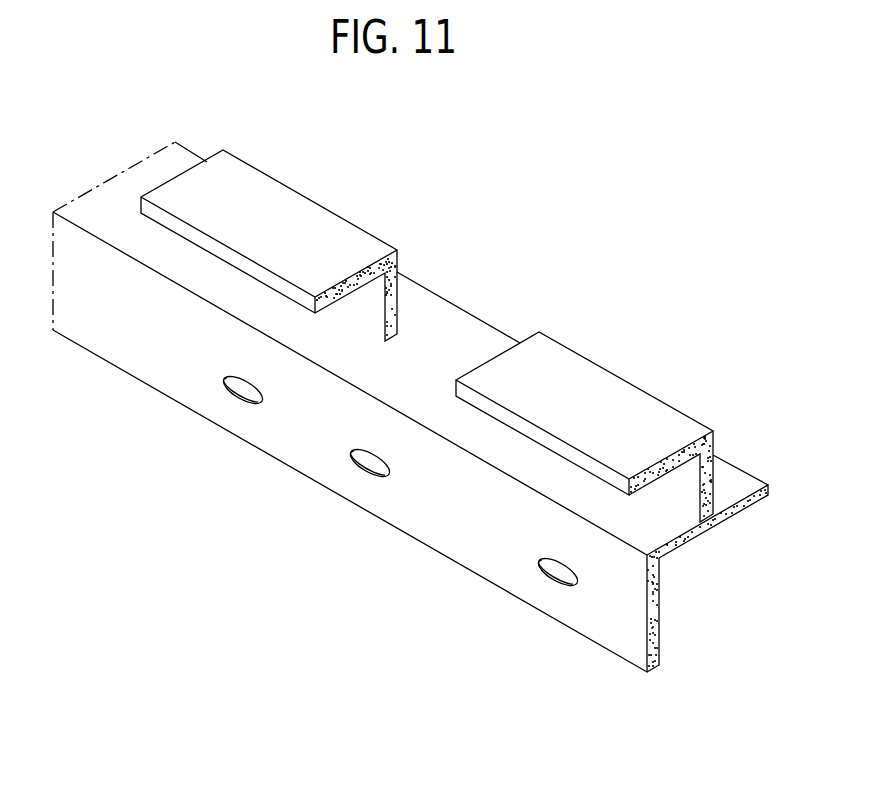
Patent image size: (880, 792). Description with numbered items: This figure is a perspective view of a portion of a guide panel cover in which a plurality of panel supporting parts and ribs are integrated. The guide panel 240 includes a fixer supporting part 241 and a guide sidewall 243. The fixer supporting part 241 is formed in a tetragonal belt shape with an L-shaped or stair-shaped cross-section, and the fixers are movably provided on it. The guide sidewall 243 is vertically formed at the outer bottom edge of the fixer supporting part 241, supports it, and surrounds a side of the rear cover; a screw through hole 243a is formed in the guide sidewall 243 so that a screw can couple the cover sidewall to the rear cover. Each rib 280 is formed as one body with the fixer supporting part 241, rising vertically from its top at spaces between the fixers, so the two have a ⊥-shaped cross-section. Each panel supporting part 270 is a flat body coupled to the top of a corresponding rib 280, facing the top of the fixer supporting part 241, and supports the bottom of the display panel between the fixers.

The guide panel 240 is at (410, 423).
The fixer supporting part 241 is at (372, 367).
The guide sidewall 243 is at (356, 501).
The screw through hole 243a is at (365, 472).
The panel supporting part 270 is at (427, 422).
The rib 280 is at (687, 485).